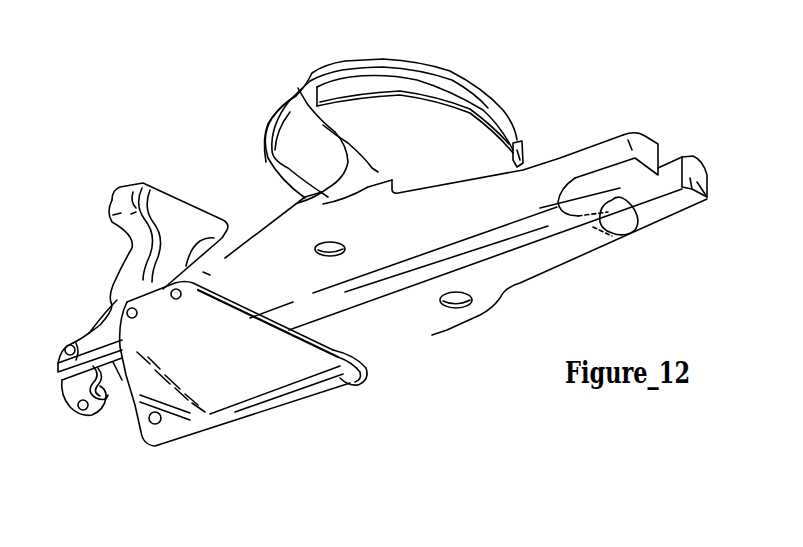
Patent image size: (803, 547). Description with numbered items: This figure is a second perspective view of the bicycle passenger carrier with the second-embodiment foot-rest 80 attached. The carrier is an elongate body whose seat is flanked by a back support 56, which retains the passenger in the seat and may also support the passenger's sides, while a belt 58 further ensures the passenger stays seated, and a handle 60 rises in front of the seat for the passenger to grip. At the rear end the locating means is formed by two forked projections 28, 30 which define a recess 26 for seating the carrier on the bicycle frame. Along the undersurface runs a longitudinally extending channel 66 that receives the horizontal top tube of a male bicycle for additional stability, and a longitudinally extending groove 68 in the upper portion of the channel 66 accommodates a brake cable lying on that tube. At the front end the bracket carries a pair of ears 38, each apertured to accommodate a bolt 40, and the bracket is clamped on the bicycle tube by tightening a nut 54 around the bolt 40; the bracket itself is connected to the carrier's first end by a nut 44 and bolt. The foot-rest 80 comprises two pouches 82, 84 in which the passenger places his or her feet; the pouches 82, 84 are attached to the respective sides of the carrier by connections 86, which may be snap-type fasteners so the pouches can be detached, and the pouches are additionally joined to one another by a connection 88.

The recess 26 is at (684, 154).
The forked projection 28 is at (626, 134).
The forked projection 30 is at (707, 198).
The ears 38 is at (640, 0).
The bolt 40 is at (585, 2).
The nut 44 is at (71, 345).
The nut 54 is at (90, 413).
The back support 56 is at (386, 110).
The belt 58 is at (288, 106).
The handle 60 is at (180, 200).
The channel 66 is at (540, 232).
The groove 68 is at (620, 192).
The foot-rest 80 is at (228, 433).
The pouch 82 is at (260, 375).
The pouch 84 is at (342, 384).
The connections 86 is at (176, 289).
The connection 88 is at (155, 424).